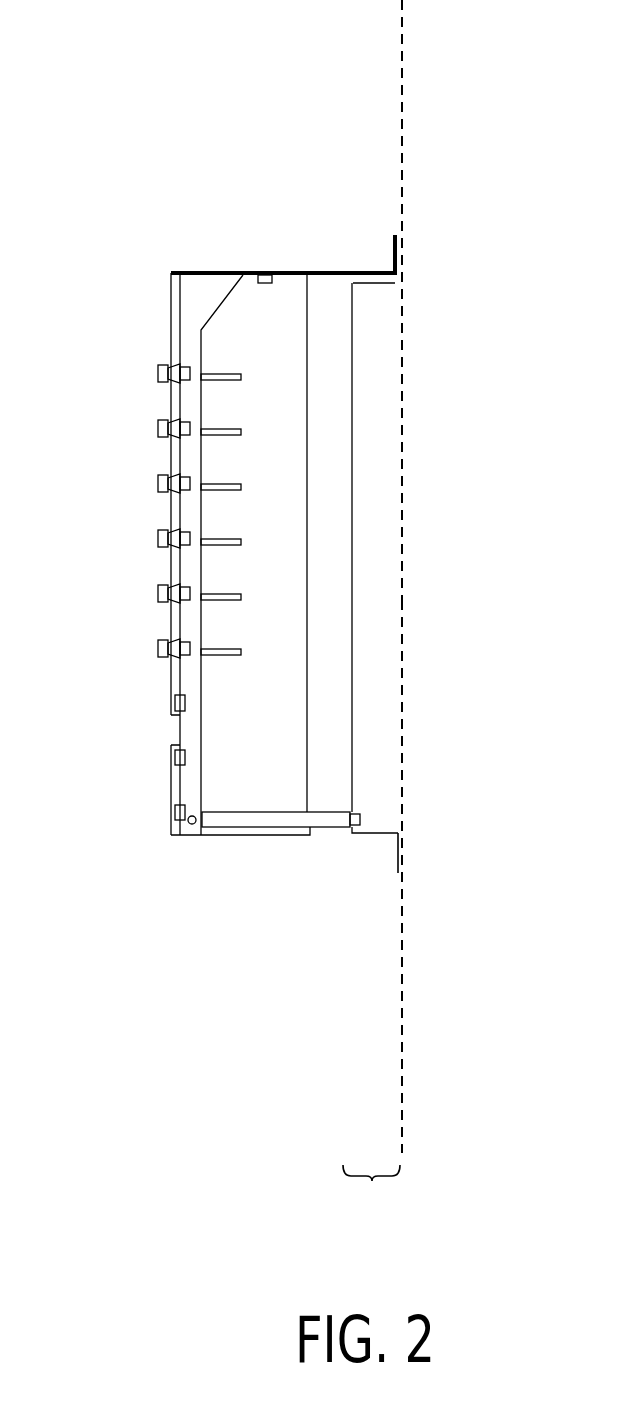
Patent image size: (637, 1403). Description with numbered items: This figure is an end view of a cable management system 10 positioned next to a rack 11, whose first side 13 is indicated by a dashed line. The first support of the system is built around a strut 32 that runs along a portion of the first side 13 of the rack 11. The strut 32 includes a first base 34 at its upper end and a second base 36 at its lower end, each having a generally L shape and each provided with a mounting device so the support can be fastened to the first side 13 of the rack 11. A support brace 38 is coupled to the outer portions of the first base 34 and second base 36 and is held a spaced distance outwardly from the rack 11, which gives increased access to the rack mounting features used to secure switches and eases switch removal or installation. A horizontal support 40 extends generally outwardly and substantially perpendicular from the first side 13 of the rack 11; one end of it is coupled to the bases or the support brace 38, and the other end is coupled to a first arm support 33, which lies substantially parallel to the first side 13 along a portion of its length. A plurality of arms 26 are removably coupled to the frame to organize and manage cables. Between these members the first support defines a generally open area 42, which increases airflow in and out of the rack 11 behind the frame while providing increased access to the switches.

The cable management system 10 is at (95, 197).
The rack 11 is at (402, 82).
The first side 13 is at (400, 1033).
The arms 26 is at (232, 373).
The strut 32 is at (371, 1195).
The first arm support 33 is at (178, 730).
The first base 34 is at (396, 258).
The second base 36 is at (399, 858).
The support brace 38 is at (353, 473).
The horizontal support 40 is at (328, 830).
The open area 42 is at (283, 677).